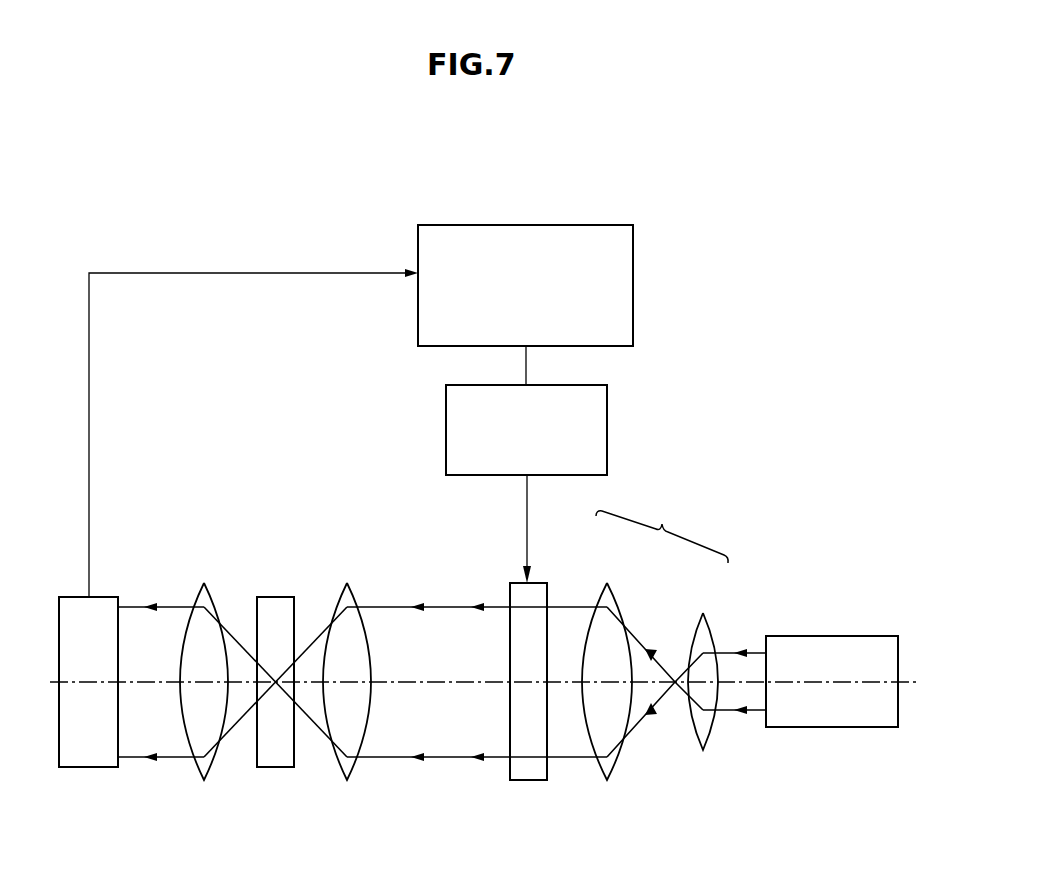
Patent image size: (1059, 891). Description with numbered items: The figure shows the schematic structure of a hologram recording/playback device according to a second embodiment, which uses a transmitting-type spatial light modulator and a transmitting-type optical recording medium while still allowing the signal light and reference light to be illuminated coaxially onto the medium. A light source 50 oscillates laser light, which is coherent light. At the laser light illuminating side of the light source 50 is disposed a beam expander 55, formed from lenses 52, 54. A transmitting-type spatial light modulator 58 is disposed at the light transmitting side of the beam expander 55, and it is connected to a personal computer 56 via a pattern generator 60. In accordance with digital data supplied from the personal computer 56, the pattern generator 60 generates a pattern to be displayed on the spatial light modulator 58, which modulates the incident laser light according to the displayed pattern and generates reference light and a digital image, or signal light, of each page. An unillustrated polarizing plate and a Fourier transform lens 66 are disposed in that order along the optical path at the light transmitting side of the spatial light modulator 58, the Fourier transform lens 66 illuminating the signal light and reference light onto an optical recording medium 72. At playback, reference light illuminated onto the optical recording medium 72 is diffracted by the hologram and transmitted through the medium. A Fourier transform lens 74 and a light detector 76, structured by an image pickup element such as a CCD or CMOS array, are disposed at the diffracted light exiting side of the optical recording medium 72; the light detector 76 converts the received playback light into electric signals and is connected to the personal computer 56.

The light source 50 is at (832, 636).
The lens 52 is at (703, 613).
The lens 54 is at (607, 583).
The beam expander 55 is at (662, 530).
The personal computer 56 is at (634, 284).
The transmitting-type spatial light modulator 58 is at (529, 773).
The pattern generator 60 is at (608, 427).
The Fourier transform lens 66 is at (347, 583).
The optical recording medium 72 is at (275, 597).
The Fourier transform lens 74 is at (204, 583).
The light detector 76 is at (91, 757).